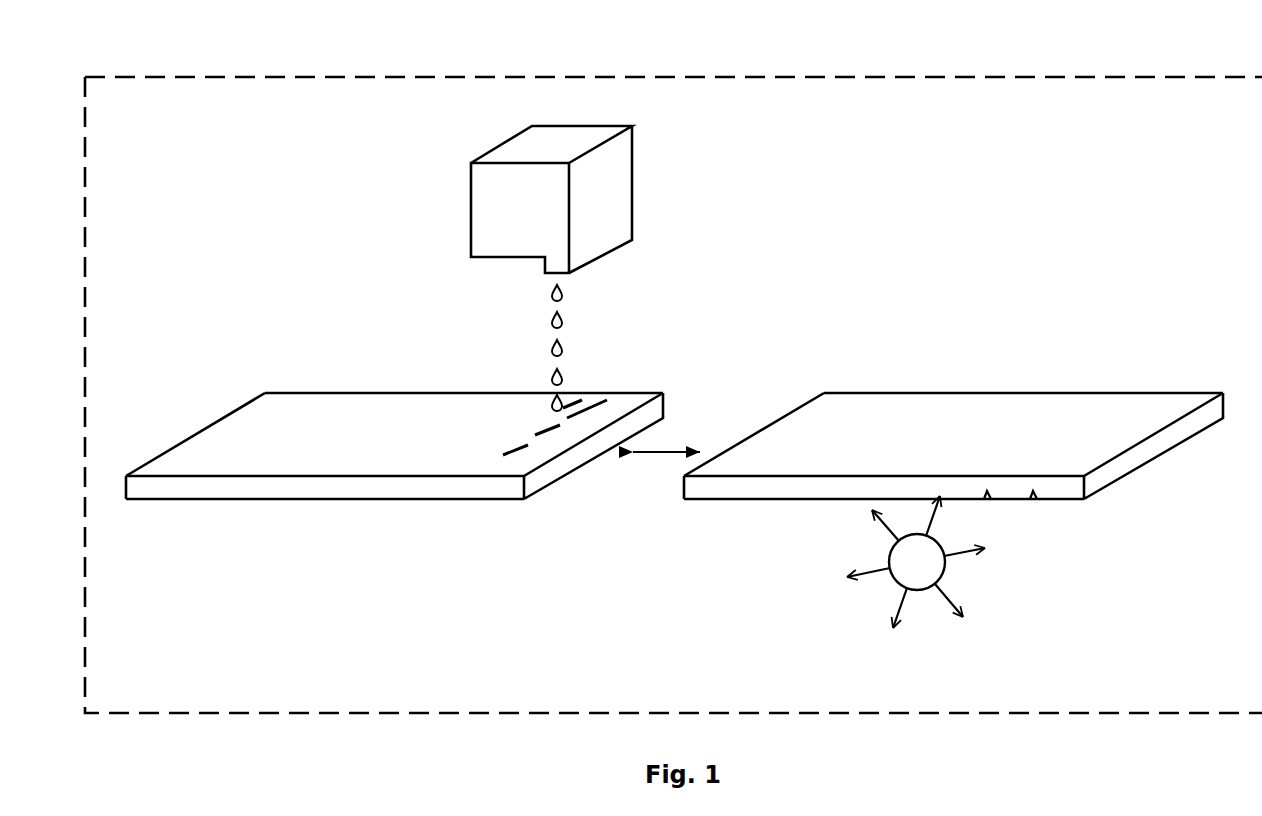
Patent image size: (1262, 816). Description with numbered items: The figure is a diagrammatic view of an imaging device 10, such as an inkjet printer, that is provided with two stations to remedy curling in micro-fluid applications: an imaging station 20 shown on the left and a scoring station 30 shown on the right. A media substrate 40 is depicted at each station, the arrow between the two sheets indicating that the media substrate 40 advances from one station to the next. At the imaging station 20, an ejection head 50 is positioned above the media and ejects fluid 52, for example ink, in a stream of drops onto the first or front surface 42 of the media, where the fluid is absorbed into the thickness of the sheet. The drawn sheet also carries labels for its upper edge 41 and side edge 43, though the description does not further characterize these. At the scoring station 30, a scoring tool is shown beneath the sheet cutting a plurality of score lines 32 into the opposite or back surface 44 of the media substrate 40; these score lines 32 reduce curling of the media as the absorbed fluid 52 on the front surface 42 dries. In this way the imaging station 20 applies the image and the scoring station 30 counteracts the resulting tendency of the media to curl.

The imaging device 10 is at (337, 77).
The imaging station 20 is at (355, 274).
The scoring station 30 is at (1045, 294).
The score lines 32 is at (938, 497).
The media substrate 40 is at (688, 460).
The top edge of substrate 41 is at (398, 393).
The first (front) surface 42 is at (213, 448).
The side edge of substrate 43 is at (237, 412).
The opposite (back) surface 44 is at (191, 512).
The ejection head 50 is at (633, 172).
The fluid 52 is at (560, 345).